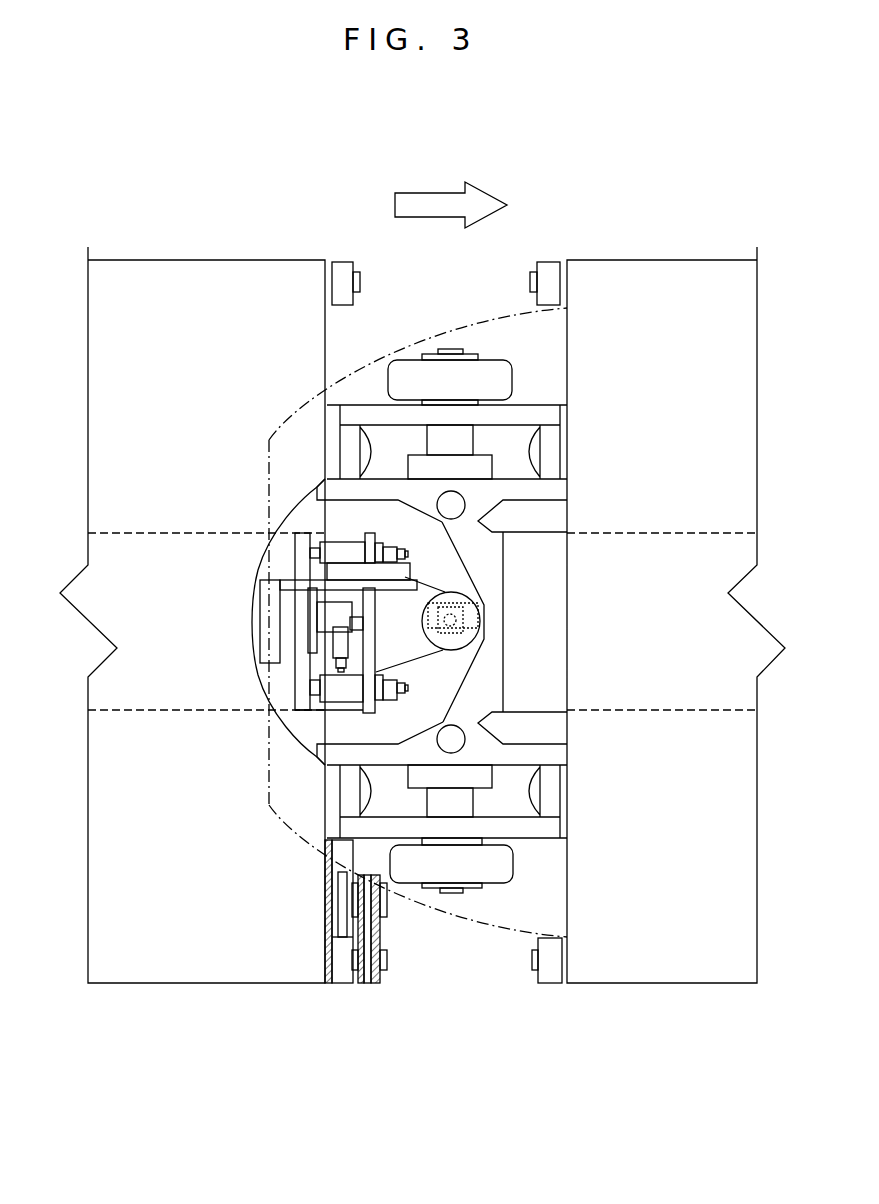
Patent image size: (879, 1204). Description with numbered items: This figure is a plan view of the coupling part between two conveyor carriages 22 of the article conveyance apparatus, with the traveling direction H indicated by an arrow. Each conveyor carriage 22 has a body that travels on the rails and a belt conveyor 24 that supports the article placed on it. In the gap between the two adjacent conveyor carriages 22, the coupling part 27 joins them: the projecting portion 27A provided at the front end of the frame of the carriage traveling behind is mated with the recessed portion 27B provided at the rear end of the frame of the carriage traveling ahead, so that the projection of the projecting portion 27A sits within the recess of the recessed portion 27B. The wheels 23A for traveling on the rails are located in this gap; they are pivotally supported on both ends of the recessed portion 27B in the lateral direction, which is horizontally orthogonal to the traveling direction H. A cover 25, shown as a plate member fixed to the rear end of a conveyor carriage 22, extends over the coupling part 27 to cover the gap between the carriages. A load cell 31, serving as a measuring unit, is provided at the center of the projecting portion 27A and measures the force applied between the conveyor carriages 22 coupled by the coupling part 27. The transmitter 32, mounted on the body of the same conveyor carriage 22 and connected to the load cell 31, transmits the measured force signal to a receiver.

The conveyor carriage 22 is at (185, 258).
The wheels 23A is at (492, 372).
The belt conveyor 24 is at (190, 965).
The cover 25 is at (297, 833).
The coupling part 27 is at (530, 622).
The projecting portion 27A is at (383, 622).
The recessed portion 27B is at (477, 600).
The load cell 31 is at (327, 633).
The transmitter 32 is at (347, 570).
The traveling direction H is at (437, 204).